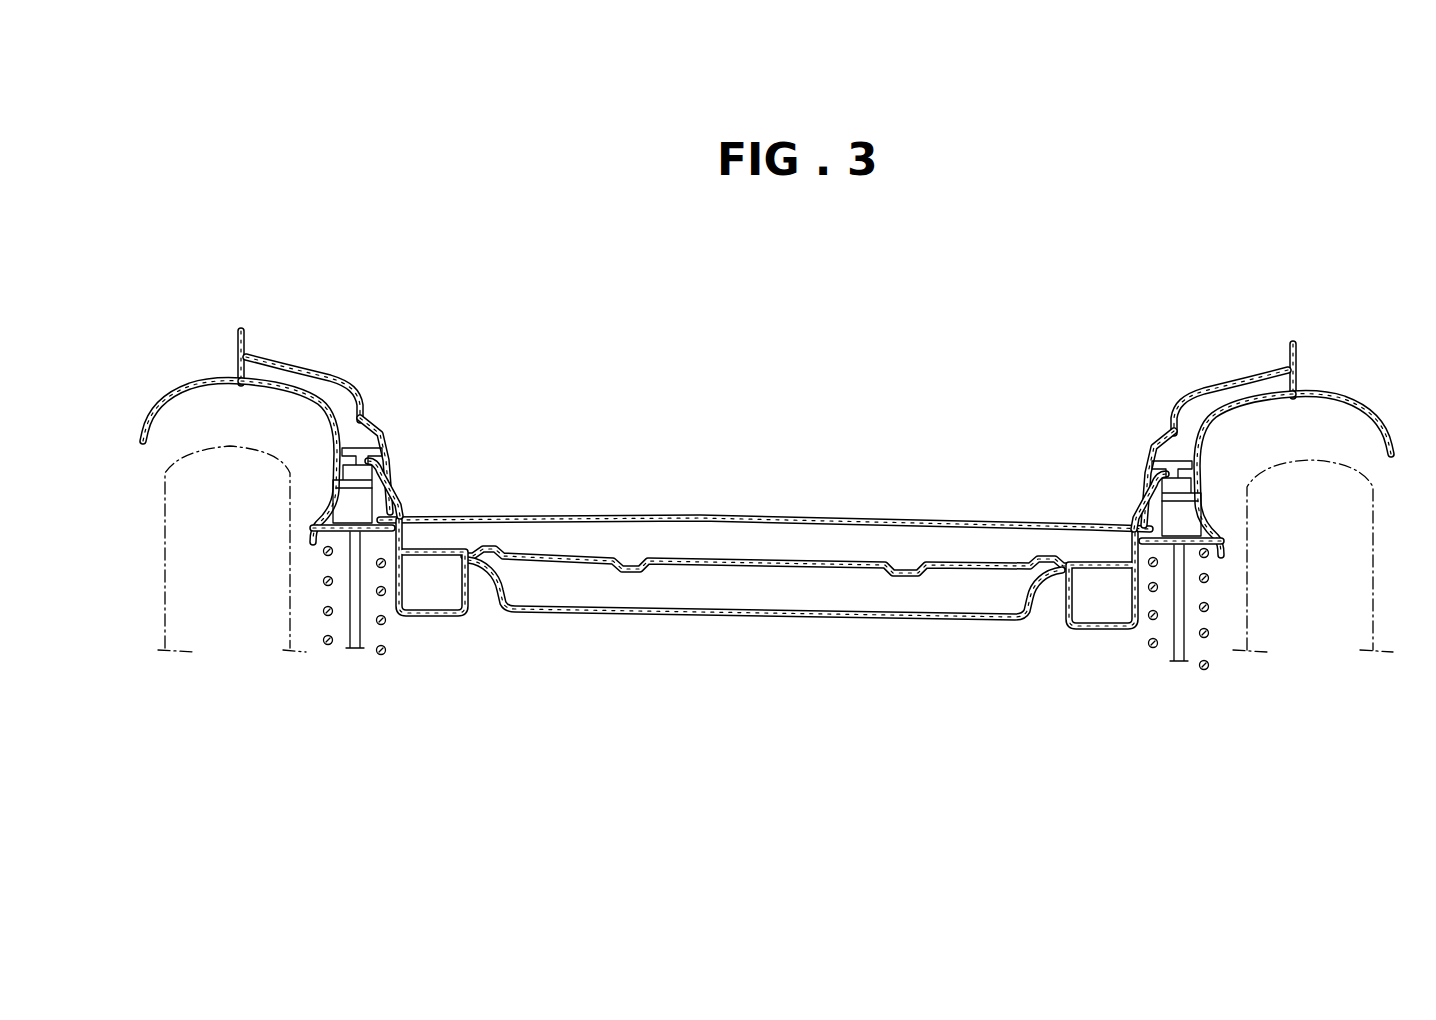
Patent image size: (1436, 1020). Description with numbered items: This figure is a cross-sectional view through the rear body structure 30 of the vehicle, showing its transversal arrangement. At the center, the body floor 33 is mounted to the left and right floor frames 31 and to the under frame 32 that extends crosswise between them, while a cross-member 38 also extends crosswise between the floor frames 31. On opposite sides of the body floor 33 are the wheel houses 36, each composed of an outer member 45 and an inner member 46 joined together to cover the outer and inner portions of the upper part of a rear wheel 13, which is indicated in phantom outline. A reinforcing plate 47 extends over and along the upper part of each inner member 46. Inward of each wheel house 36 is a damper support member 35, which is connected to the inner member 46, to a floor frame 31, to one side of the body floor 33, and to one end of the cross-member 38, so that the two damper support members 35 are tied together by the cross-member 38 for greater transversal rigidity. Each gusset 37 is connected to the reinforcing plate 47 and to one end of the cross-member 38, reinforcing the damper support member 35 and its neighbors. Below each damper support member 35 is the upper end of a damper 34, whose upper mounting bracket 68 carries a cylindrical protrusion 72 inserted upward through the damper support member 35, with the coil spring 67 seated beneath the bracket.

The rear wheel 13 is at (190, 455).
The rear body structure 30 is at (430, 128).
The floor frame 31 is at (440, 615).
The under frame 32 is at (584, 605).
The body floor 33 is at (473, 552).
The damper 34 is at (357, 682).
The damper support member 35 is at (382, 512).
The wheel house 36 is at (232, 344).
The gusset 37 is at (392, 407).
The cross-member 38 is at (565, 515).
The outer member 45 is at (197, 377).
The inner member 46 is at (272, 381).
The reinforcing plate 47 is at (322, 373).
The coil spring 67 is at (327, 645).
The upper mounting bracket 68 is at (350, 505).
The cylindrical protrusion 72 is at (330, 500).